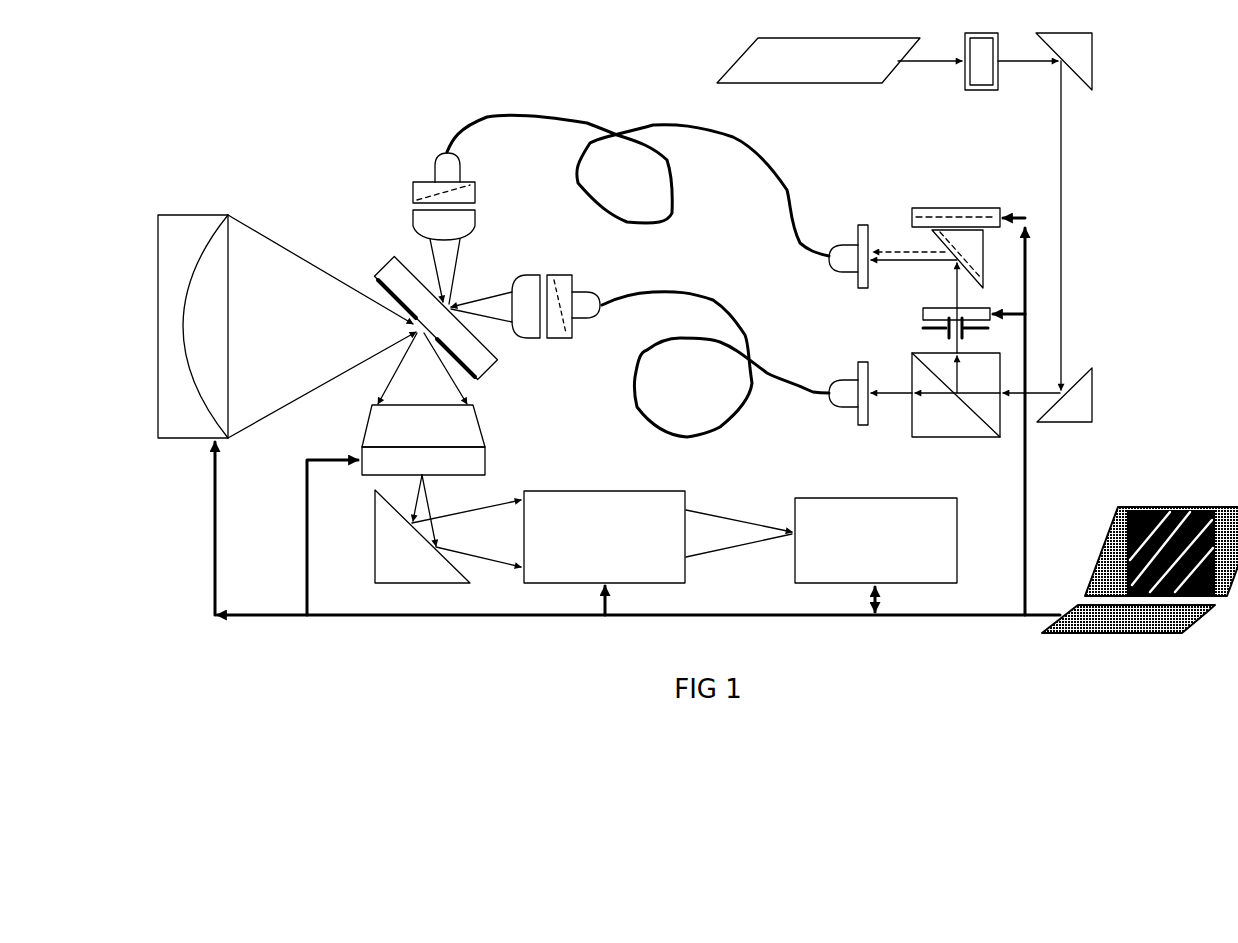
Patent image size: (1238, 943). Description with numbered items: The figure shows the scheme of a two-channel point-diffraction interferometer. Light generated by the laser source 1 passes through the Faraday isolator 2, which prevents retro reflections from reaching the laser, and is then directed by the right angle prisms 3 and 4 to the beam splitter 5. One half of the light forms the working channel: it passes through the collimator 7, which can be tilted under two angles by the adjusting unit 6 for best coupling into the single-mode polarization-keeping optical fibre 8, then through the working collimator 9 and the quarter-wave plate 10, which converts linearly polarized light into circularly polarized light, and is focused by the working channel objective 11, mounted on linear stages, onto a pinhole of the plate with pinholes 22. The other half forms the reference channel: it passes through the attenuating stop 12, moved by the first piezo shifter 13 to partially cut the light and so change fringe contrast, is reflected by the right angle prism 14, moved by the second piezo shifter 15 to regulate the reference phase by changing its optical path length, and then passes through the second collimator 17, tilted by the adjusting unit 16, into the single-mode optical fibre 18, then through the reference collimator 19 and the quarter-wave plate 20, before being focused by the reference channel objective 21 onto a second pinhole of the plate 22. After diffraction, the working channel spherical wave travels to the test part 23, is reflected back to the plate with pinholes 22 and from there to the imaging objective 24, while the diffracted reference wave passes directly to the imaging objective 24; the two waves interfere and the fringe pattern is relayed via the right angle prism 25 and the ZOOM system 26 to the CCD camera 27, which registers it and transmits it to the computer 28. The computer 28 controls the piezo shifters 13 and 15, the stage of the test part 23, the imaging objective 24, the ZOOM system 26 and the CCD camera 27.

The laser source 1 is at (816, 60).
The Faraday isolator 2 is at (970, 60).
The right angle prism 3 is at (1054, 60).
The right angle prism 4 is at (1064, 382).
The beam splitter 5 is at (945, 392).
The unit for adjusting two angles 6 is at (860, 381).
The collimator 7 is at (838, 386).
The single-mode optical fibre keeping polarization of light unchanged 8 is at (715, 350).
The working collimator 9 is at (586, 291).
The plate (λ/4) 10 is at (558, 294).
The working channel objective 11 is at (524, 295).
The attenuating stop 12 is at (942, 329).
The first piezo shifter 13 is at (943, 310).
The right angle prism 14 is at (942, 258).
The second piezo shifter 15 is at (948, 205).
The unit for adjusting two angles 16 is at (855, 245).
The second collimator 17 is at (833, 248).
The single-mode optical fibre keeping polarization of light unchanged 18 is at (638, 174).
The reference collimator 19 is at (433, 164).
The plate (λ/4) 20 is at (428, 192).
The reference channel objective 21 is at (428, 224).
The plate with pinholes 22 is at (433, 308).
The test part 23 is at (191, 312).
The imaging objective 24 is at (407, 440).
The right angle prism 25 is at (406, 536).
The ZOOM system 26 is at (589, 537).
The CCD camera 27 is at (860, 540).
The computer 28 is at (1140, 570).